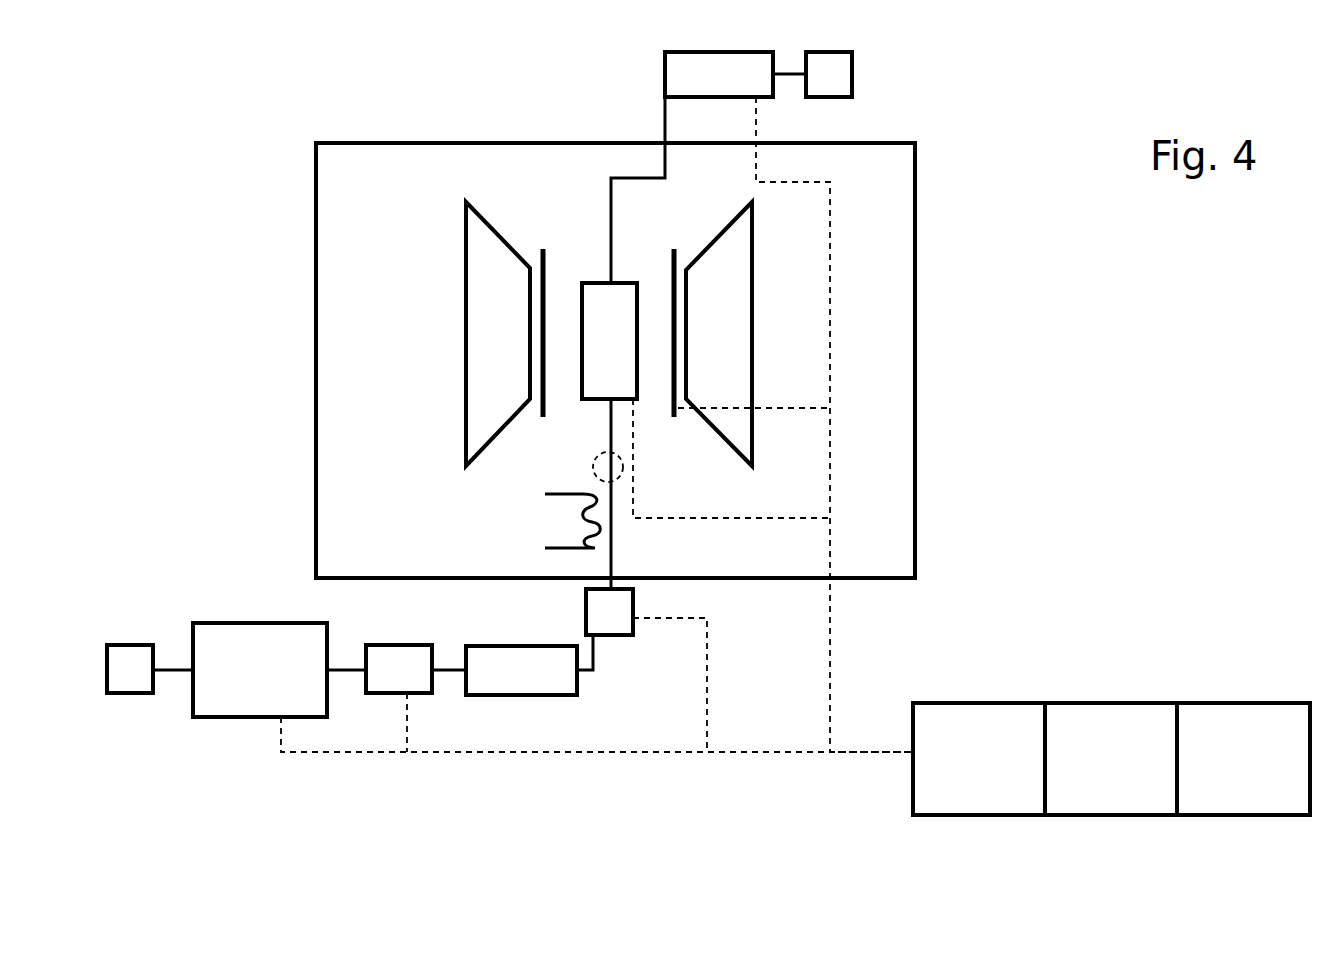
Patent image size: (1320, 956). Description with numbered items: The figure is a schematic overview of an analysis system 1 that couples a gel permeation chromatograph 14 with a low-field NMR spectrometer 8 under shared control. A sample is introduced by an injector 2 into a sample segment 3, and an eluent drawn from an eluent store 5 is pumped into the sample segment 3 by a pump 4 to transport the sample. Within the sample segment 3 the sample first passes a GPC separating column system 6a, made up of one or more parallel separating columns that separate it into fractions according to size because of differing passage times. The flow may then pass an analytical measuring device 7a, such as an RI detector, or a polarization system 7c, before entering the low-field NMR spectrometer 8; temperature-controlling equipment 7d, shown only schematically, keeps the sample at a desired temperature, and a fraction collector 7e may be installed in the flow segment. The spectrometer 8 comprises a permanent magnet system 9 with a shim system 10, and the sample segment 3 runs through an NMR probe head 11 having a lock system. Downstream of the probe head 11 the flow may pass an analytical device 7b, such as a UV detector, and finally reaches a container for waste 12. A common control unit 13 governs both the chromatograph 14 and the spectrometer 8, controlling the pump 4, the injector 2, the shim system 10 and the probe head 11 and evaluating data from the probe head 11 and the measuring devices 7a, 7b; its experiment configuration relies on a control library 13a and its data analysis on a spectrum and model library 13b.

The analysis system 1 is at (987, 398).
The injector 2 is at (416, 669).
The sample segment 3 is at (595, 645).
The pump 4 is at (279, 670).
The eluent store 5 is at (150, 669).
The GPC separating column system 6a is at (521, 670).
The analytical measuring device 7a is at (609, 612).
The analytical device 7b is at (719, 74).
The polarization system 7c is at (609, 624).
The temperature-controlling equipment 7d is at (570, 547).
The fraction collector 7e is at (601, 460).
The low-field NMR spectrometer 8 is at (890, 523).
The permanent magnet system 9 is at (498, 334).
The shim system 10 is at (545, 248).
The NMR probe head 11 is at (609, 341).
The container for waste 12 is at (812, 74).
The common control unit 13 is at (1111, 759).
The control library 13a is at (1111, 759).
The spectrum and model library 13b is at (1243, 759).
The gel permeation chromatograph 14 is at (537, 728).